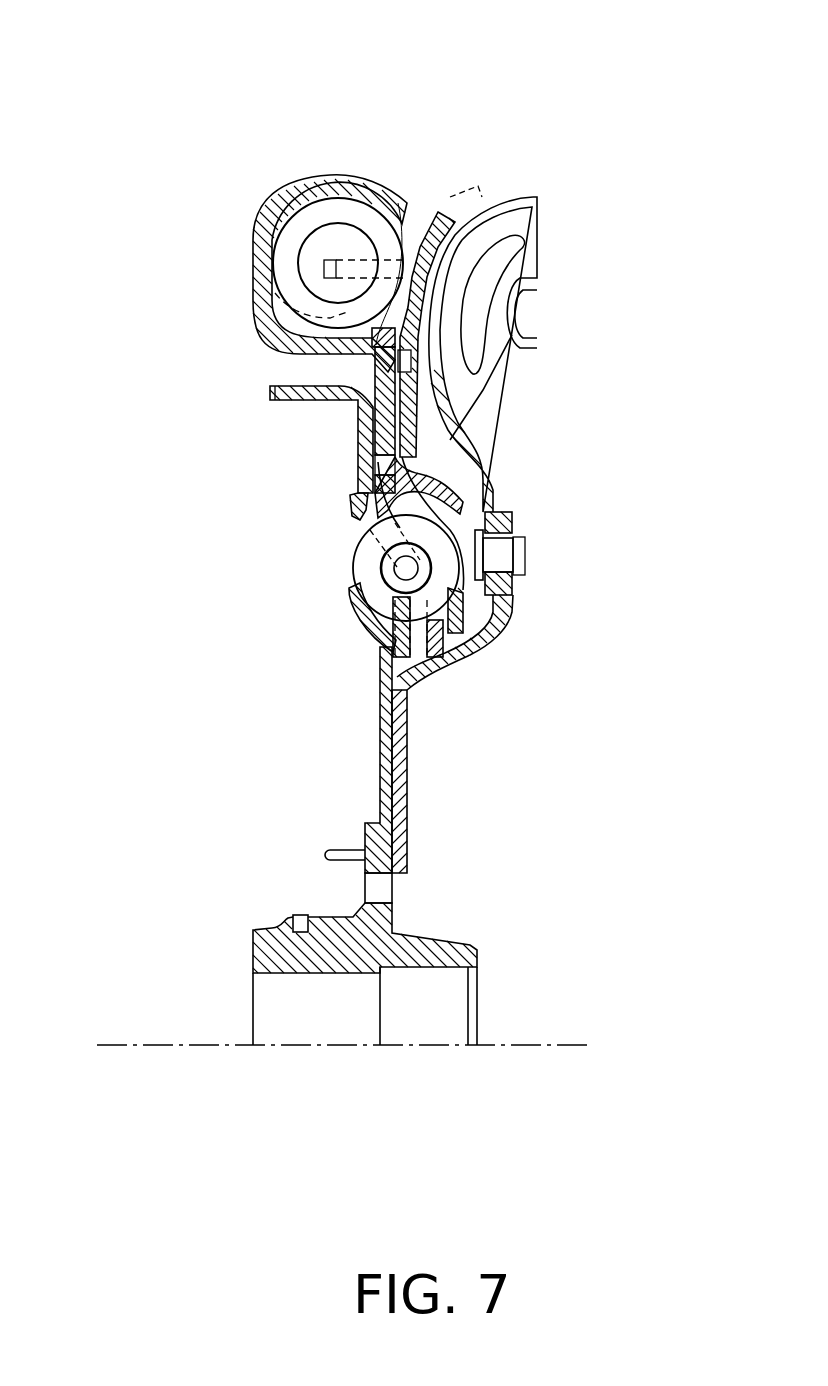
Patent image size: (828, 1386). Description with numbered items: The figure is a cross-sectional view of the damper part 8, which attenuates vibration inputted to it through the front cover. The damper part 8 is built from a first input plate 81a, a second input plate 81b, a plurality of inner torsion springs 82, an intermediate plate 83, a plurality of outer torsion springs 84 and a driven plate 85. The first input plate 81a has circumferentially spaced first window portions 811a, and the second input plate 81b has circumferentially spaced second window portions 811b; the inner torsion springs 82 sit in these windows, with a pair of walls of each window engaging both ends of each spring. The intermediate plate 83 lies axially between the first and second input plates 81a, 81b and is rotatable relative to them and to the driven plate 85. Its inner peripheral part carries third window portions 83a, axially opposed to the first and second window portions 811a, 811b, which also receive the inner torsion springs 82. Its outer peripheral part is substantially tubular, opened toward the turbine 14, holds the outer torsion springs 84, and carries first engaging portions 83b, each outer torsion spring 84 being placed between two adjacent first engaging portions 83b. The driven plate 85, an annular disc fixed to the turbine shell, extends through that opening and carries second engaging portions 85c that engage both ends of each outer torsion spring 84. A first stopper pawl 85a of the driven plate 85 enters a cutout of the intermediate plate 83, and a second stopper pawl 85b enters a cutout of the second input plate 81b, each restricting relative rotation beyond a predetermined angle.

The damper part 8 is at (345, 112).
The turbine 14 is at (530, 200).
The first input plate 81a is at (287, 405).
The second input plate 81b is at (415, 443).
The first window portions 811a is at (345, 585).
The second window portions 811b is at (493, 517).
The inner torsion springs 82 is at (368, 568).
The intermediate plate 83 is at (257, 253).
The third window portions 83a is at (447, 643).
The first engaging portions 83b is at (300, 322).
The outer torsion springs 84 is at (256, 200).
The driven plate 85 is at (440, 210).
The first stopper pawl 85a is at (398, 203).
The second stopper pawl 85b is at (417, 347).
The second engaging portions 85c is at (330, 262).